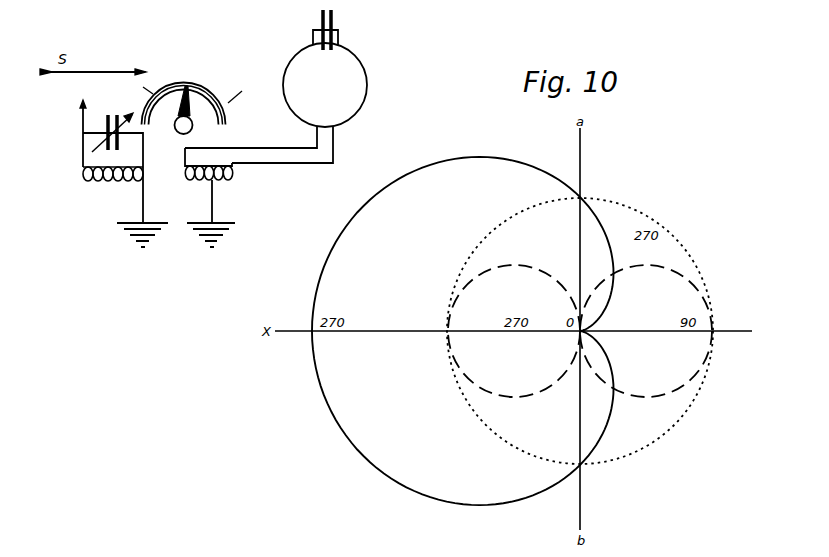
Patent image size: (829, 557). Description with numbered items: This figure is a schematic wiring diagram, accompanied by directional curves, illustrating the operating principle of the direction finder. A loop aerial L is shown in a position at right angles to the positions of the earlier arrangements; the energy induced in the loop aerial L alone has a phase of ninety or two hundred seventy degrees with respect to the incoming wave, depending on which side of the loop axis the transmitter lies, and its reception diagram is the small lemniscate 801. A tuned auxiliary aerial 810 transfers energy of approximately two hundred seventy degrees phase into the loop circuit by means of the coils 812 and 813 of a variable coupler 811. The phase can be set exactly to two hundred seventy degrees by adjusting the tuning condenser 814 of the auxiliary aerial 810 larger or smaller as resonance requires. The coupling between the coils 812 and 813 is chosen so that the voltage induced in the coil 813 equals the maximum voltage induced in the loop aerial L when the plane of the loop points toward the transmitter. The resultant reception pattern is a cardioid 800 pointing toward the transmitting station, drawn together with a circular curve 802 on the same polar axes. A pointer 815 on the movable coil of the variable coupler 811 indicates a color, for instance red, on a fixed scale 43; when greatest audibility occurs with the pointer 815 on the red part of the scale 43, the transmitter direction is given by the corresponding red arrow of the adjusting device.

The tuned auxiliary aerial 810 is at (81, 122).
The variable coupler 811 is at (134, 190).
The coil of variable coupler 812 is at (112, 181).
The coil of variable coupler 813 is at (223, 183).
The tuning condenser 814 is at (108, 115).
The pointer 815 is at (189, 86).
The fixed scale 43 is at (216, 107).
The loop aerial L is at (367, 93).
The cardioid 800 is at (318, 381).
The small lemniscate 801 is at (527, 397).
The circular directional characteristic 802 is at (657, 440).